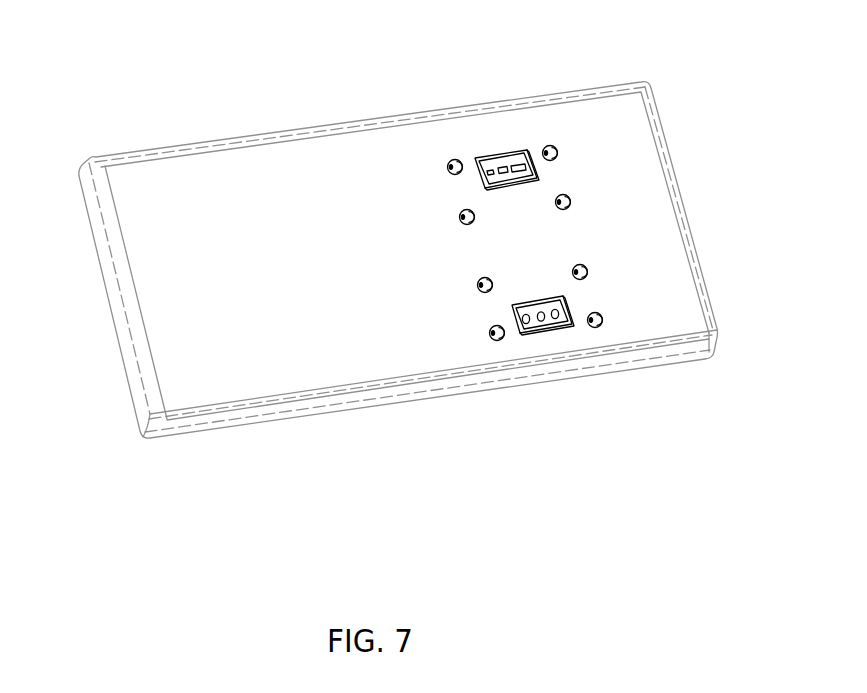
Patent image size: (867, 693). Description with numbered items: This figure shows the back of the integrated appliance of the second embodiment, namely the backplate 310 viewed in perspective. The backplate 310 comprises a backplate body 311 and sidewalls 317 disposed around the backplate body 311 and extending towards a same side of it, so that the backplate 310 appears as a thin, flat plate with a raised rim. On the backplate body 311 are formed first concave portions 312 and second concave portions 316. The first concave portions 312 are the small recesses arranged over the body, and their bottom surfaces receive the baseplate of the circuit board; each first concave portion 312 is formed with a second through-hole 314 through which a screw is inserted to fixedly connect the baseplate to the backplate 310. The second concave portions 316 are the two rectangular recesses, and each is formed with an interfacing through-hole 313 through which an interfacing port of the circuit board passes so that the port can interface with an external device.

The backplate 310 is at (540, 403).
The backplate body 311 is at (385, 202).
The first concave portions 312 is at (553, 145).
The interfacing through-hole 313 is at (510, 172).
The second through-holes 314 is at (560, 158).
The second concave portions 316 is at (513, 160).
The sidewalls 317 is at (140, 393).